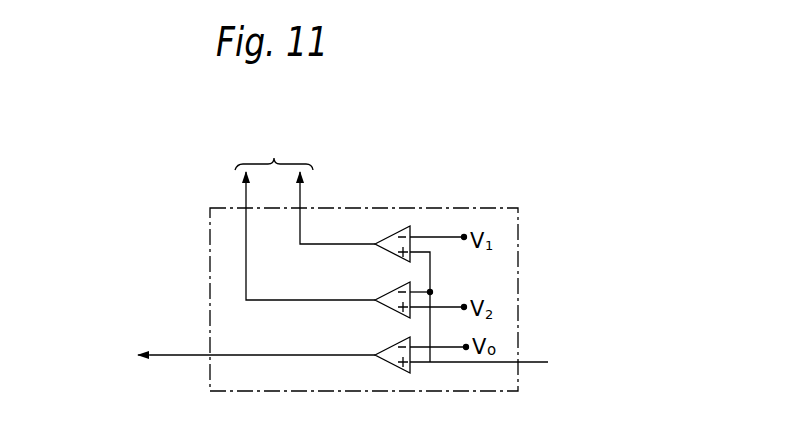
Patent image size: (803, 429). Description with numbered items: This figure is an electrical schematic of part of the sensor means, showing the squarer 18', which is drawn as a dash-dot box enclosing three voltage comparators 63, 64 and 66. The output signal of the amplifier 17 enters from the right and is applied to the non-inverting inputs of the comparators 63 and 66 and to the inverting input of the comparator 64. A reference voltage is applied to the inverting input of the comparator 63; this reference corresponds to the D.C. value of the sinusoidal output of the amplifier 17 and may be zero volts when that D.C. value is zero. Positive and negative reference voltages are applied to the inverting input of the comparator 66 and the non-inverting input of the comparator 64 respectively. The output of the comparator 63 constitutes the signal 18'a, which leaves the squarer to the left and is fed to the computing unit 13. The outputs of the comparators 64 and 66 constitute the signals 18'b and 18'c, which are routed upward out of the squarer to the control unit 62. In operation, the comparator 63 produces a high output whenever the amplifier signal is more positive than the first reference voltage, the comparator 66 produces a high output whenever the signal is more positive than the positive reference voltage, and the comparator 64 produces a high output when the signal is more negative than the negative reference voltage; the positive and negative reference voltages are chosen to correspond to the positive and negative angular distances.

The squarer 18' is at (368, 285).
The voltage comparator 66 is at (386, 240).
The voltage comparator 64 is at (386, 286).
The voltage comparator 63 is at (388, 348).
The signal 18'a is at (256, 339).
The signal 18'b is at (310, 236).
The signal 18'c is at (337, 208).
The control unit 62 is at (291, 143).
The computing unit 13 is at (113, 339).
The amplifier 17 is at (536, 369).